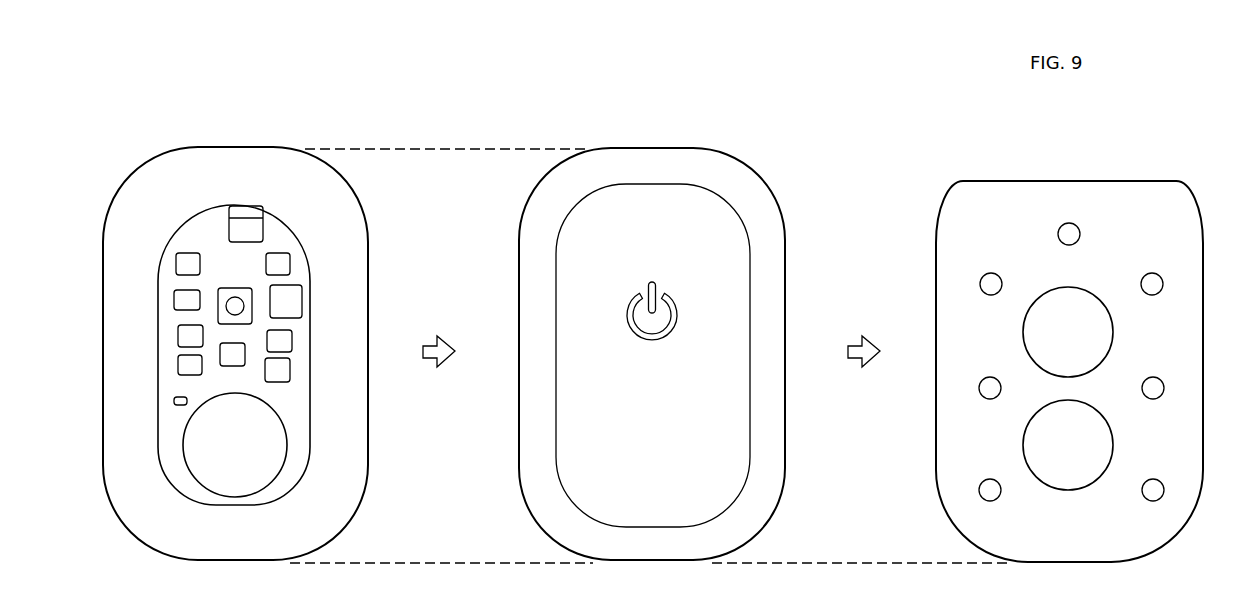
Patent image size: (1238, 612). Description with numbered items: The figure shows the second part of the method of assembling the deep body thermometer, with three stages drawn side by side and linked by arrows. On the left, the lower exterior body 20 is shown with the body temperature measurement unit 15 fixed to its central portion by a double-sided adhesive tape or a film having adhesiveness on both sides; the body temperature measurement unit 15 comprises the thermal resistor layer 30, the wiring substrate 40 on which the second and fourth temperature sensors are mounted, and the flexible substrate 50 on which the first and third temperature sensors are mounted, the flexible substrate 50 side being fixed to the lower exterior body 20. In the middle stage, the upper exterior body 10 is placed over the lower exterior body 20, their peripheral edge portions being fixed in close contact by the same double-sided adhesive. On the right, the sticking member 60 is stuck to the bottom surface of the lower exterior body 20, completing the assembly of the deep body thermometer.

The upper exterior body 10 is at (775, 305).
The body temperature measurement unit 15 is at (329, 355).
The lower exterior body 20 is at (362, 305).
The thermal resistor layer 30 is at (238, 262).
The wiring substrate 40 is at (235, 335).
The flexible substrate 50 is at (230, 445).
The sticking member 60 is at (937, 423).